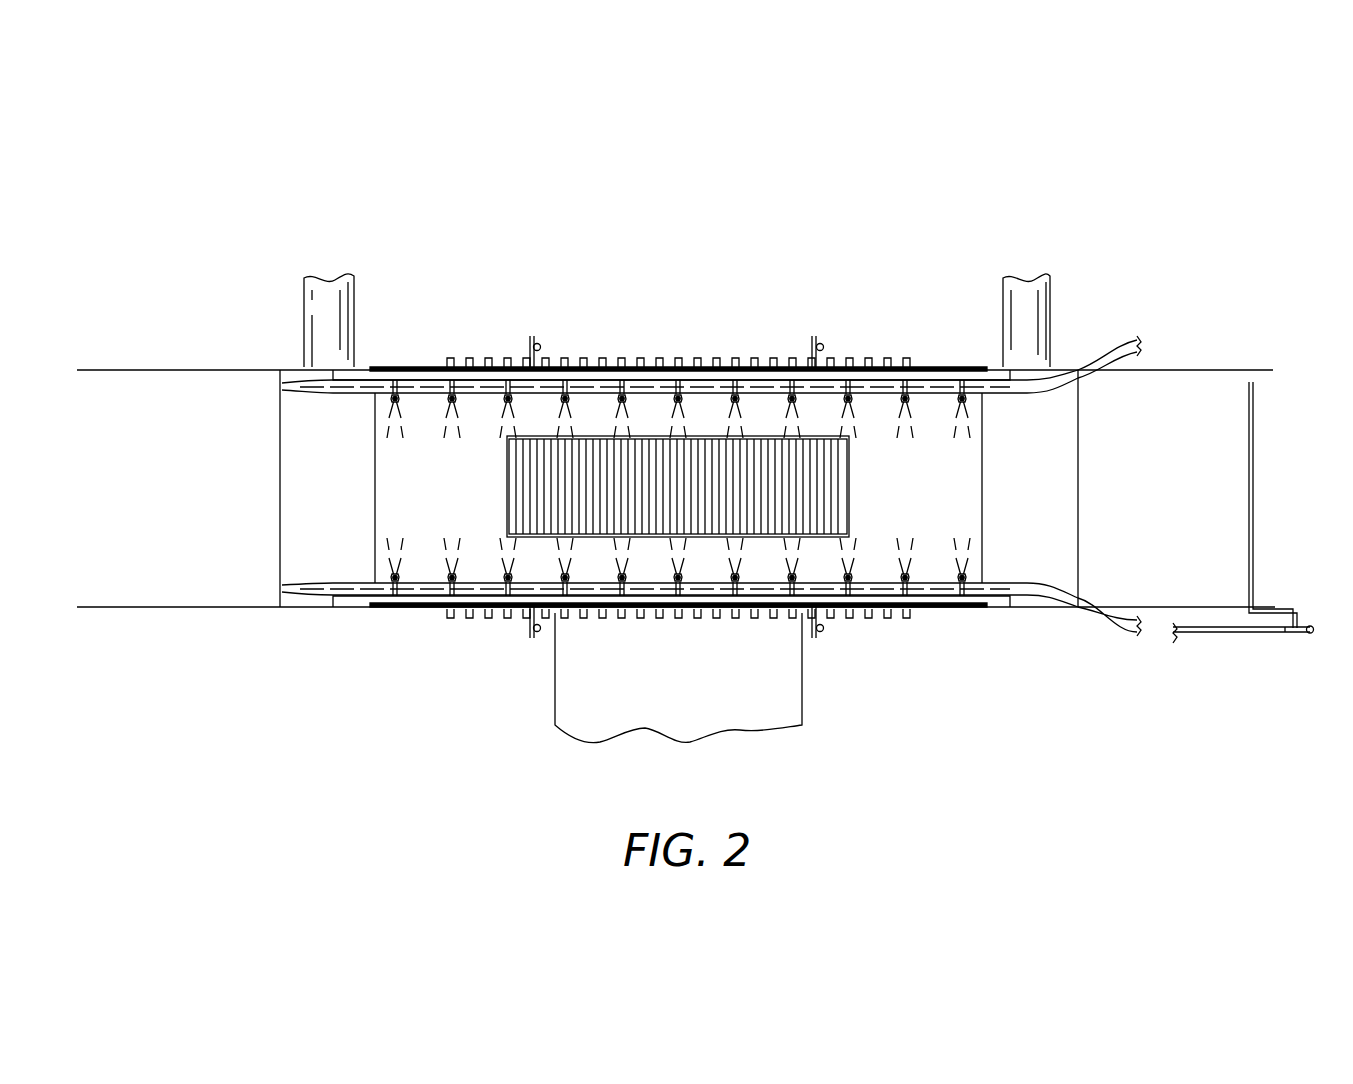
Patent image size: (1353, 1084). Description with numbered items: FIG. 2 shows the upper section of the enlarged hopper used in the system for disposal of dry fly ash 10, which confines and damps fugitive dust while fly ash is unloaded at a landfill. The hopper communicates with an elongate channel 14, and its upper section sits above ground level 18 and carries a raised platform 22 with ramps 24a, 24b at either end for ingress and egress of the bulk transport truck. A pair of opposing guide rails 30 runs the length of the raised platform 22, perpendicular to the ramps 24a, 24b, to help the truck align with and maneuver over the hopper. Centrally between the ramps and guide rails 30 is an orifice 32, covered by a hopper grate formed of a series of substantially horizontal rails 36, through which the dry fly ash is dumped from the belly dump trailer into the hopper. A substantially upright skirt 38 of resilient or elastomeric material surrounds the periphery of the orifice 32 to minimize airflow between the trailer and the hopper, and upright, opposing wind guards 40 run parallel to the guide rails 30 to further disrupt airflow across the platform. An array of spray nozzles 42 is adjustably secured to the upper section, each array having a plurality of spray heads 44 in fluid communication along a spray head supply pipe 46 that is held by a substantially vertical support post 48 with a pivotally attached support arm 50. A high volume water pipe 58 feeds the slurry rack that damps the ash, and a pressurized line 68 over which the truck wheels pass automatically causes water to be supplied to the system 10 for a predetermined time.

The system for disposal of dry fly ash 10 is at (362, 158).
The elongate channel 14 is at (725, 700).
The ground level 18 is at (172, 570).
The raised platform 22 is at (460, 487).
The ingress ramp 24a is at (352, 455).
The egress ramp 24b is at (1060, 512).
The guide rails 30 is at (320, 381).
The orifice 32 is at (652, 465).
The horizontal rails 36 is at (718, 360).
The upright skirt 38 is at (852, 478).
The wind guards 40 is at (938, 372).
The array of spray nozzles 42 is at (455, 378).
The spray heads 44 is at (962, 400).
The spray head supply pipe 46 is at (415, 372).
The support post 48 is at (537, 347).
The support arm 50 is at (532, 347).
The high volume water pipe 58 is at (322, 313).
The pressurized line 68 is at (1249, 408).